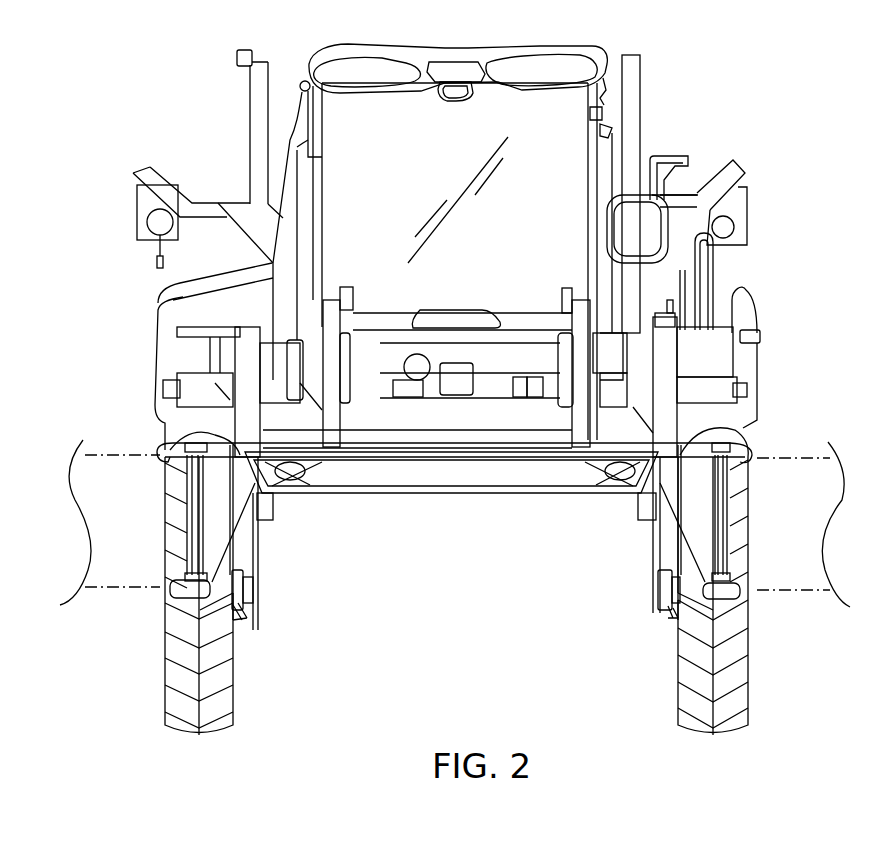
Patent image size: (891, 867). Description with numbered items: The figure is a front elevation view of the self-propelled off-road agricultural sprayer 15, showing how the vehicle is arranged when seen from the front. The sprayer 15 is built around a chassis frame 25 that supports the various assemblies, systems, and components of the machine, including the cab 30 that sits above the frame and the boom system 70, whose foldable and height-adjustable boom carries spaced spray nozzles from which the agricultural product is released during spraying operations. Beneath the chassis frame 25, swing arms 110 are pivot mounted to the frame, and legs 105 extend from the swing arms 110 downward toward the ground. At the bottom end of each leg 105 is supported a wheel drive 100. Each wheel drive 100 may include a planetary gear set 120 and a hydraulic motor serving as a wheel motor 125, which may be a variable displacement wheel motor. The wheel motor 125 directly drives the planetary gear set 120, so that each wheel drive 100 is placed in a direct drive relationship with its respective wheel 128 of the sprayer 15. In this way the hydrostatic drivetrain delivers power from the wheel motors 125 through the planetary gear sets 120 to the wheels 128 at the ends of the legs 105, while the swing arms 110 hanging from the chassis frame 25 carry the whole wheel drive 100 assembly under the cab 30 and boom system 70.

The sprayer 15 is at (752, 79).
The chassis frame 25 is at (543, 497).
The cab 30 is at (594, 43).
The boom system 70 is at (795, 437).
The wheel drive 100 is at (255, 622).
The leg 105 is at (262, 555).
The swing arm 110 is at (289, 508).
The planetary gear set 120 is at (242, 622).
The wheel motor 125 is at (248, 591).
The wheel 128 is at (198, 738).